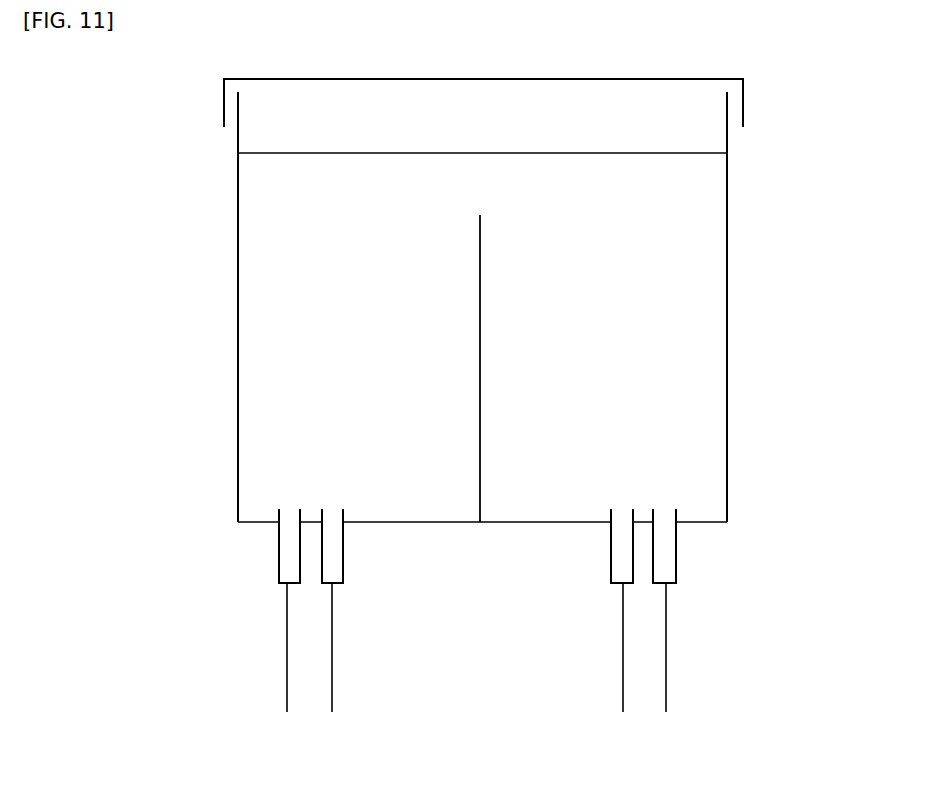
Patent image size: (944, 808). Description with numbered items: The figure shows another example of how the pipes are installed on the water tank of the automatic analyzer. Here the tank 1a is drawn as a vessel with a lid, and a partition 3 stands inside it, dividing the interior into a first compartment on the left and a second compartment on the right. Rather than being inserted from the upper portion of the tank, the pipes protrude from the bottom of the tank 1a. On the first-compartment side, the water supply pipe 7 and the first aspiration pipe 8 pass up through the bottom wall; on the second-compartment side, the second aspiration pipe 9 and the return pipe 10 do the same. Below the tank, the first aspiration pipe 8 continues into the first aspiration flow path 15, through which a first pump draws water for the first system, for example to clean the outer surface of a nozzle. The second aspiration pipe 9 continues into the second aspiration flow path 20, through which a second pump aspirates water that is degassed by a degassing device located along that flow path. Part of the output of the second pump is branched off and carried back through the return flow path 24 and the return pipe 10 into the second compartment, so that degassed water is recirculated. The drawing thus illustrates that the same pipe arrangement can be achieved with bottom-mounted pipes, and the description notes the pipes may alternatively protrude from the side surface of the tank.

The tank 1a is at (237, 245).
The partition 3 is at (483, 430).
The water supply pipe 7 is at (279, 565).
The first aspiration pipe 8 is at (320, 550).
The second aspiration pipe 9 is at (637, 540).
The return pipe 10 is at (676, 560).
The first aspiration flow path 15 is at (332, 637).
The second aspiration flow path 20 is at (624, 635).
The return flow path 24 is at (667, 615).